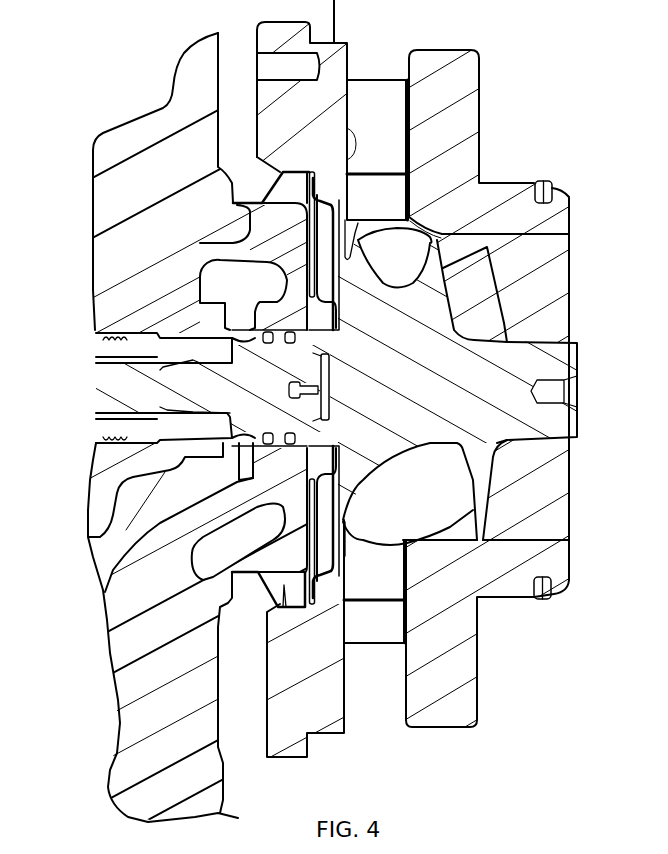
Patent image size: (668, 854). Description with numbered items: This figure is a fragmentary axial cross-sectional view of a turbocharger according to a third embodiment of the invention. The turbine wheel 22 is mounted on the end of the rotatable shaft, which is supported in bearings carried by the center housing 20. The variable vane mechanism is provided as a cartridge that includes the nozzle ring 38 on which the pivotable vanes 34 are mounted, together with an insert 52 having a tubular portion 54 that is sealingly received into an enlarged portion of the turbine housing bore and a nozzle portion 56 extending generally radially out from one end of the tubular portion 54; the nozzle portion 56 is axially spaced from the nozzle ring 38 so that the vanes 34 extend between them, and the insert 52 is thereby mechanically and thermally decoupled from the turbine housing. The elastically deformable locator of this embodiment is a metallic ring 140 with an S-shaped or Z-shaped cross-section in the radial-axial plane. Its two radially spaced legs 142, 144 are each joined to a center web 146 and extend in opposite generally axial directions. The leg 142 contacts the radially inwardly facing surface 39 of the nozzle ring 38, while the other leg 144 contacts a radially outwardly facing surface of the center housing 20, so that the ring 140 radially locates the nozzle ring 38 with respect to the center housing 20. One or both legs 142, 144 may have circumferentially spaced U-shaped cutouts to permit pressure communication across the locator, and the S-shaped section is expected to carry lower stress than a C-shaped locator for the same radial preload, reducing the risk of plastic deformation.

The center housing 20 is at (143, 182).
The turbine wheel 22 is at (434, 305).
The vanes 34 is at (374, 580).
The nozzle ring 38 is at (280, 703).
The radially inwardly facing surface 39 is at (283, 582).
The insert 52 is at (464, 172).
The tubular portion 54 is at (521, 217).
The nozzle portion 56 is at (457, 82).
The metallic ring 140 is at (255, 578).
The leg 142 is at (293, 168).
The leg 144 is at (200, 243).
The center web 146 is at (233, 173).